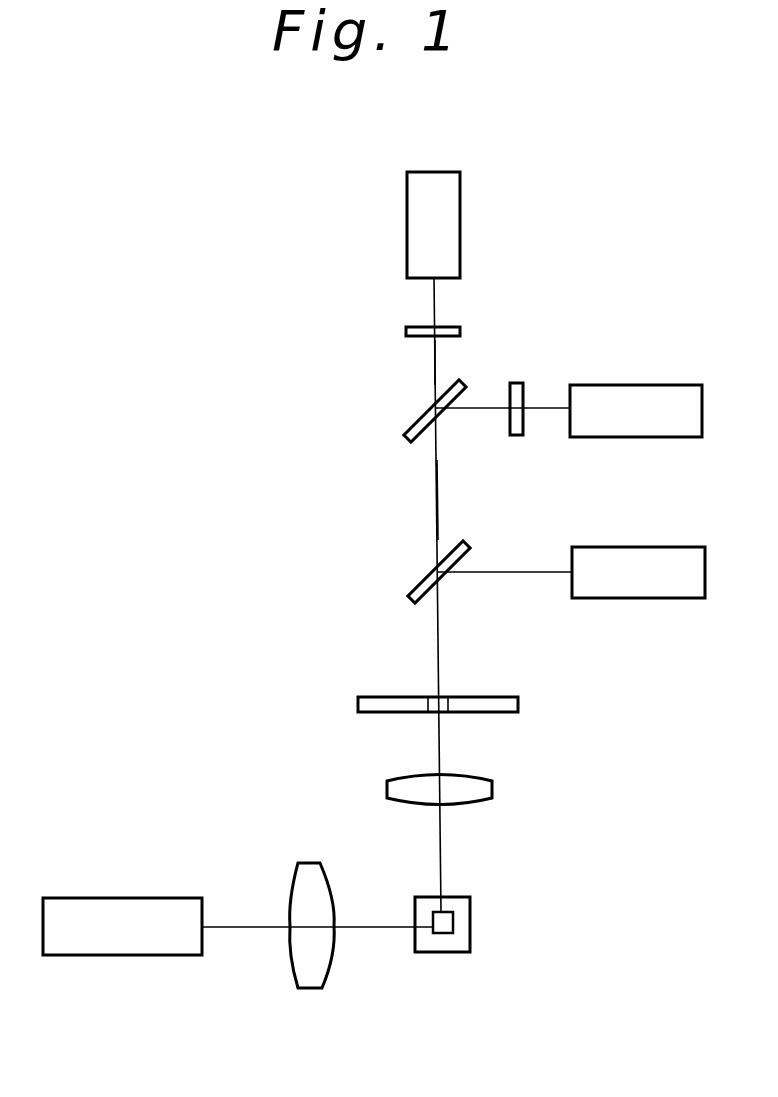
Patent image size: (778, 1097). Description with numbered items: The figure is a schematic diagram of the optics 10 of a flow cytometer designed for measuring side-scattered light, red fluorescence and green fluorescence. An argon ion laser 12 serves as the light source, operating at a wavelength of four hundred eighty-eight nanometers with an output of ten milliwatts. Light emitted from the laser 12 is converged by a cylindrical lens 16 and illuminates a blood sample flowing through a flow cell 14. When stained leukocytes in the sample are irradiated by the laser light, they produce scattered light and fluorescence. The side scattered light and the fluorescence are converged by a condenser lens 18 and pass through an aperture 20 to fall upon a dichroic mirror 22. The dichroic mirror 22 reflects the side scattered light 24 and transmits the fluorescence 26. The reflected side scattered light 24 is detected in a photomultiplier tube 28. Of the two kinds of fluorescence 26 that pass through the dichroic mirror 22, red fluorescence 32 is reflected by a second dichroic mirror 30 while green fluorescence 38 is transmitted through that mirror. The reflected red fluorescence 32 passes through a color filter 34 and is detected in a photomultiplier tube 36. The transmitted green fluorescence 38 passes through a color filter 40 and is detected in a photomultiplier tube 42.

The optics 10 is at (643, 822).
The argon ion laser 12 is at (166, 950).
The flow cell 14 is at (470, 938).
The cylindrical lens 16 is at (325, 958).
The condenser lens 18 is at (392, 788).
The aperture 20 is at (378, 697).
The dichroic mirror 22 is at (417, 582).
The side scattered light 24 is at (503, 572).
The fluorescence 26 is at (436, 500).
The photomultiplier tube 28 is at (645, 547).
The dichroic mirror 30 is at (412, 428).
The red fluorescence 32 is at (470, 407).
The color filter 34 is at (521, 384).
The photomultiplier tube 36 is at (645, 385).
The green fluorescence 38 is at (434, 371).
The color filter 40 is at (406, 332).
The photomultiplier tube 42 is at (407, 226).